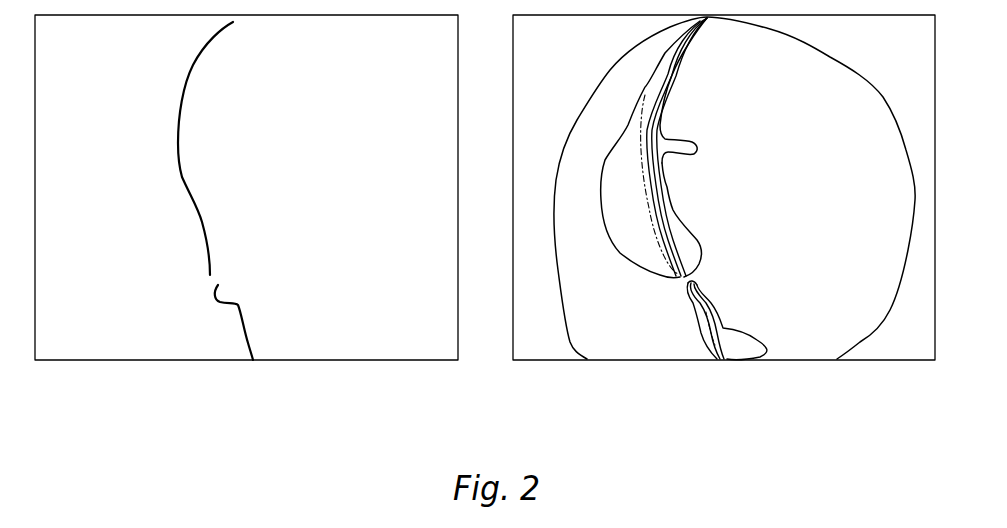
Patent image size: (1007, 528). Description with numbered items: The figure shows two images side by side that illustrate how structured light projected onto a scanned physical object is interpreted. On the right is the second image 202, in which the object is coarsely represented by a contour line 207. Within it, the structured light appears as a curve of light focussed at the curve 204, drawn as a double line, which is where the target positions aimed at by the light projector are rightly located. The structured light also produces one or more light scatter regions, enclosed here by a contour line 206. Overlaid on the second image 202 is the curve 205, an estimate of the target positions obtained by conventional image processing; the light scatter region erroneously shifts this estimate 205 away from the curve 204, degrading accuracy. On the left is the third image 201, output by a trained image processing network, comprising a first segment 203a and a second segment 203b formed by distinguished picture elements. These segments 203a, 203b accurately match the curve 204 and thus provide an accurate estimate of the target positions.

The third image 201 is at (112, 50).
The second image 202 is at (592, 50).
The first segment 203a is at (200, 218).
The second segment 203b is at (242, 312).
The curve of focussed light 204 is at (662, 155).
The estimate of target positions 205 is at (663, 203).
The contour line of light scatter region 206 is at (703, 245).
The contour line of physical object 207 is at (570, 340).